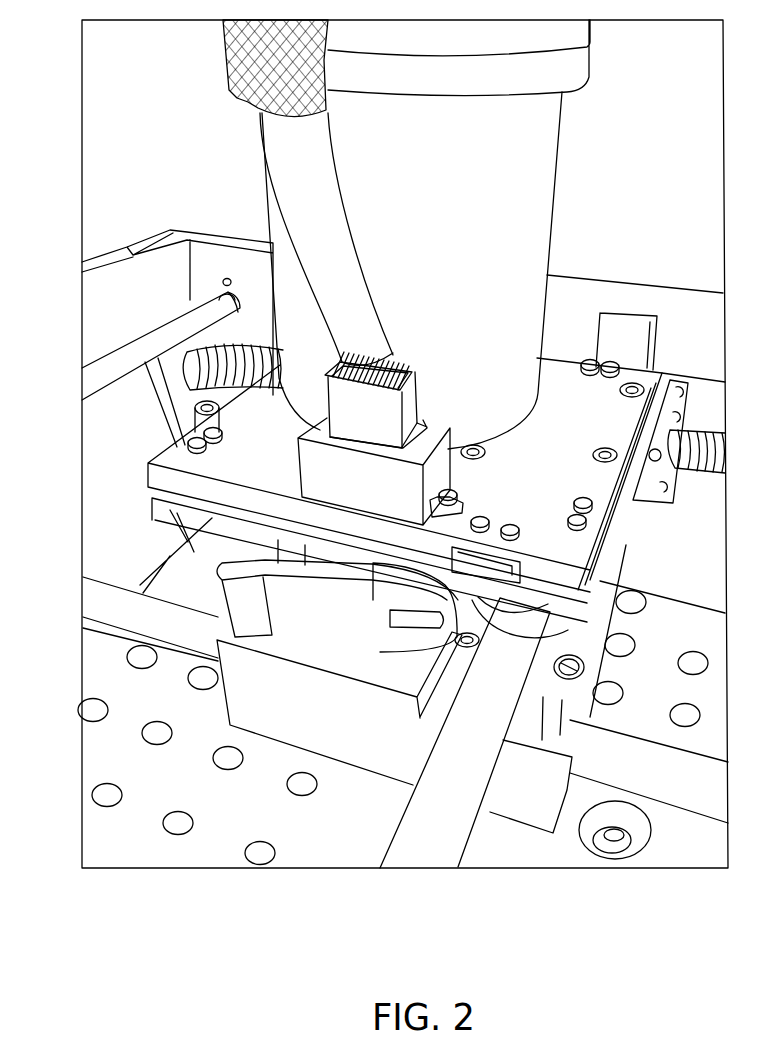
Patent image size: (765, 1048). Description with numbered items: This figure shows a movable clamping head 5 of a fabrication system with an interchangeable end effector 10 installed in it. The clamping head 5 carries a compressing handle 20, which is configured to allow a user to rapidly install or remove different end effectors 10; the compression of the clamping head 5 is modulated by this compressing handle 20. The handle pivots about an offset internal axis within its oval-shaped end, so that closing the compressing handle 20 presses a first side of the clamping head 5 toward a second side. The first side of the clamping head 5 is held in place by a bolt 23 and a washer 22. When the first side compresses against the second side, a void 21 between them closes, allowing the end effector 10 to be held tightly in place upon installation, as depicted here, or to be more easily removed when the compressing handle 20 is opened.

The movable clamping head 5 is at (593, 382).
The end effector 10 is at (545, 170).
The compressing handle 20 is at (318, 612).
The void 21 is at (357, 565).
The washer 22 is at (268, 537).
The bolt 23 is at (272, 518).